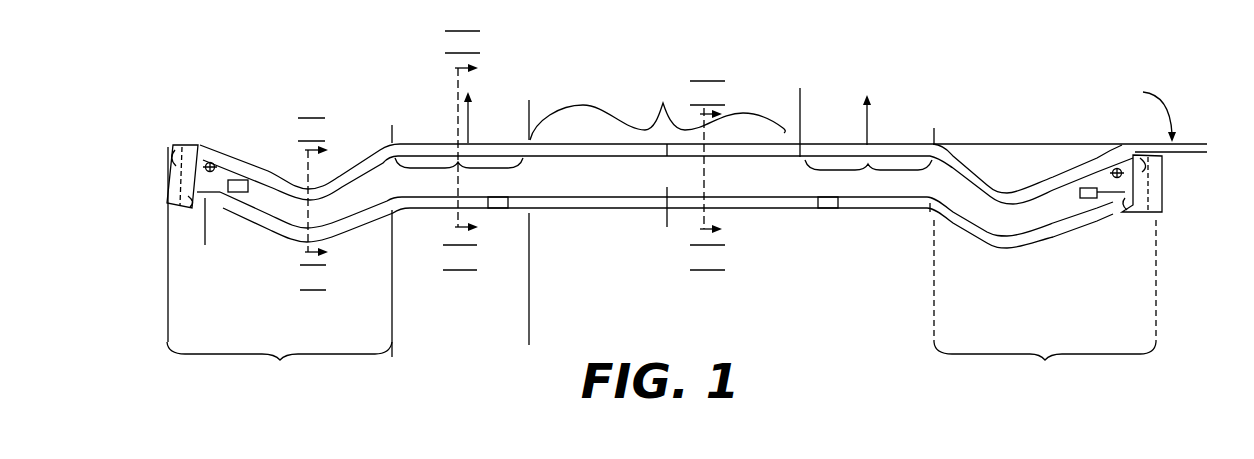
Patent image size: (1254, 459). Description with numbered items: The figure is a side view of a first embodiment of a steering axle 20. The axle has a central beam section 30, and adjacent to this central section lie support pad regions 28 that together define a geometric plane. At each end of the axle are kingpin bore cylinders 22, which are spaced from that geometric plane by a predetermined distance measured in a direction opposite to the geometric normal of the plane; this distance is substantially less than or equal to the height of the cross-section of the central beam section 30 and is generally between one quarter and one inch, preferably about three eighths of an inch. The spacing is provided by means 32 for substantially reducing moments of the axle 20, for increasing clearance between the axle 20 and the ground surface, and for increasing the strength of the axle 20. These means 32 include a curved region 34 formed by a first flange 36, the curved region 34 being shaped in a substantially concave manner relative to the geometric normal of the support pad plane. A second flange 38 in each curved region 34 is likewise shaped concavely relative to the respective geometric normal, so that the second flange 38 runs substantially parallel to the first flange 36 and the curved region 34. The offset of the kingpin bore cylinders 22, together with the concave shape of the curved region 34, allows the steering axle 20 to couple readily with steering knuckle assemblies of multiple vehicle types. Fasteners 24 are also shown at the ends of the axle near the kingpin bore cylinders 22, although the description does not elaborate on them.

The steering axle 20 is at (687, 212).
The kingpin bore cylinders 22 is at (188, 198).
The fastener 24 is at (220, 195).
The support pad region 28 is at (663, 179).
The central beam section 30 is at (664, 208).
The means for substantially reducing moments 32 is at (661, 271).
The curved region 34 is at (367, 141).
The first flange 36 is at (267, 175).
The second flange 38 is at (352, 228).